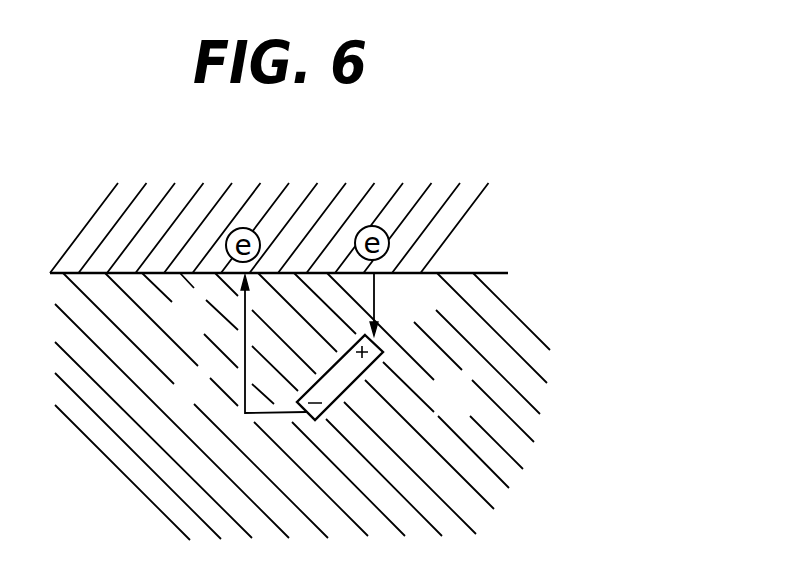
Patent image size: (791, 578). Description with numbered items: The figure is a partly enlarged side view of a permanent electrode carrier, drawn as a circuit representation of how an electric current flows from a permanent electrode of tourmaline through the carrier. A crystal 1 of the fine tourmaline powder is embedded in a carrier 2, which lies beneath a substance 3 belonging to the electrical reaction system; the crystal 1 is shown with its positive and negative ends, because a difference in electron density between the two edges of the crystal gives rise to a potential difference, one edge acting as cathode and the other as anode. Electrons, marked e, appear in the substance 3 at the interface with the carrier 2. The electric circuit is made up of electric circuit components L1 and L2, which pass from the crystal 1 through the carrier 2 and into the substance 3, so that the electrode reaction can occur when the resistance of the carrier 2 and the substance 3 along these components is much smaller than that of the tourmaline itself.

The crystal of fine tourmaline powder 1 is at (347, 385).
The carrier 2 is at (200, 329).
The substance 3 is at (281, 190).
The electric circuit component L1 is at (383, 307).
The electric circuit component L2 is at (242, 369).